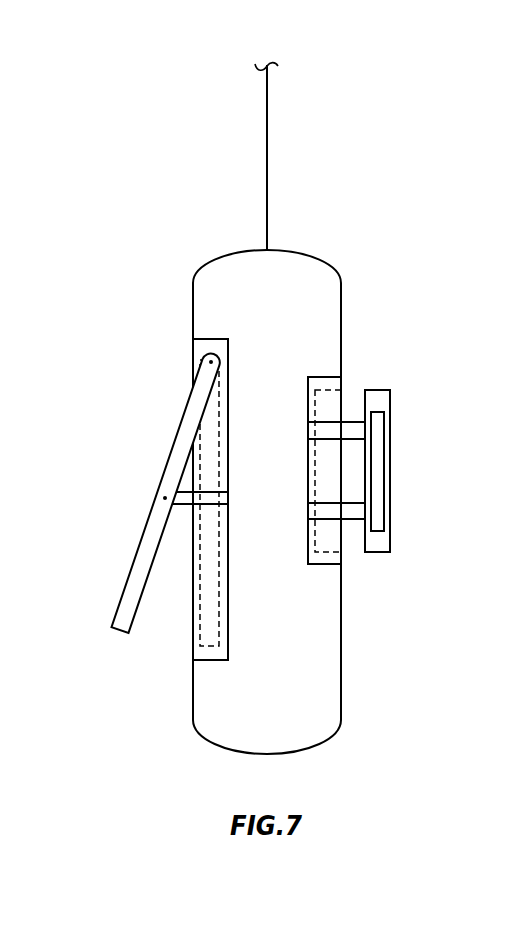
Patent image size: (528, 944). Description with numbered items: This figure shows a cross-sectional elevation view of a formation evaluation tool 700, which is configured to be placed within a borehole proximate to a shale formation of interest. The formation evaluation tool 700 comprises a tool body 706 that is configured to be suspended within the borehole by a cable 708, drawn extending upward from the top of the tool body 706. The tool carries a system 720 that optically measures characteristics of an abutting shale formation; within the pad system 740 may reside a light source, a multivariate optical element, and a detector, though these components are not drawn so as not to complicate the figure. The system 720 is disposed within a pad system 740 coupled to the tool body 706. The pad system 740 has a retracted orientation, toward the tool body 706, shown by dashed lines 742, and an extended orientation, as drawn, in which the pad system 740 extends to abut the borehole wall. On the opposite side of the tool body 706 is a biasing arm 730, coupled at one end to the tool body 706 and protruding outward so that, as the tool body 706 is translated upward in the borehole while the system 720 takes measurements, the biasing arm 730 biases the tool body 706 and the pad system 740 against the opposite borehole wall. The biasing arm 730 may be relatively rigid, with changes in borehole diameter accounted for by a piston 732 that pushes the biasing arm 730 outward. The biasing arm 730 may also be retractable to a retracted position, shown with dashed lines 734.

The formation evaluation tool 700 is at (378, 119).
The tool body 706 is at (291, 709).
The cable 708 is at (267, 115).
The system 720 is at (387, 440).
The biasing arm 730 is at (168, 453).
The piston 732 is at (210, 487).
The dashed lines 734 is at (203, 628).
The pad system 740 is at (364, 368).
The dashed lines 742 is at (342, 542).